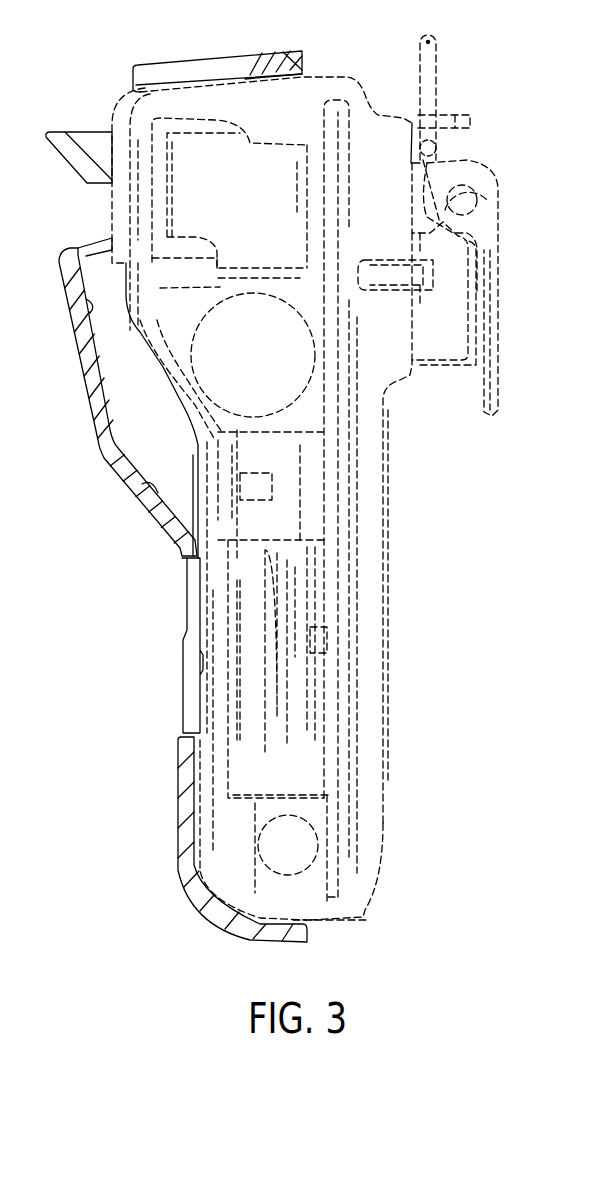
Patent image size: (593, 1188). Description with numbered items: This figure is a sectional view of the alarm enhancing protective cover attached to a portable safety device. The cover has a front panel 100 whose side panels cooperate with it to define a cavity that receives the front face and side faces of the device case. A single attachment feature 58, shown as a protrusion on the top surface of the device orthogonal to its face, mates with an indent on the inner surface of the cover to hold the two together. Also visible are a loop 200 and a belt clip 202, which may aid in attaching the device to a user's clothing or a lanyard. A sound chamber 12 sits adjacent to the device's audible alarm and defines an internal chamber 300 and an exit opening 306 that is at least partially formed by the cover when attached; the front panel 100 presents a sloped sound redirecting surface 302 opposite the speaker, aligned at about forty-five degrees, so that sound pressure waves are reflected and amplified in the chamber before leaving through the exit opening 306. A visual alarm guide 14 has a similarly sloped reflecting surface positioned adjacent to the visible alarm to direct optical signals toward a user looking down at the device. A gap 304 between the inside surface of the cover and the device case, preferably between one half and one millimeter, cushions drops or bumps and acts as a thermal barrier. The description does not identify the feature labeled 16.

The sound chamber 12 is at (167, 470).
The visual alarm guide 14 is at (70, 157).
The side portion 16 is at (170, 563).
The attachment feature 58 is at (288, 46).
The front panel 100 is at (97, 407).
The loop 200 is at (437, 38).
The belt clip 202 is at (495, 322).
The internal chamber 300 is at (149, 415).
The sound redirecting surface 302 is at (86, 307).
The gap 304 is at (207, 890).
The exit opening 306 is at (88, 260).